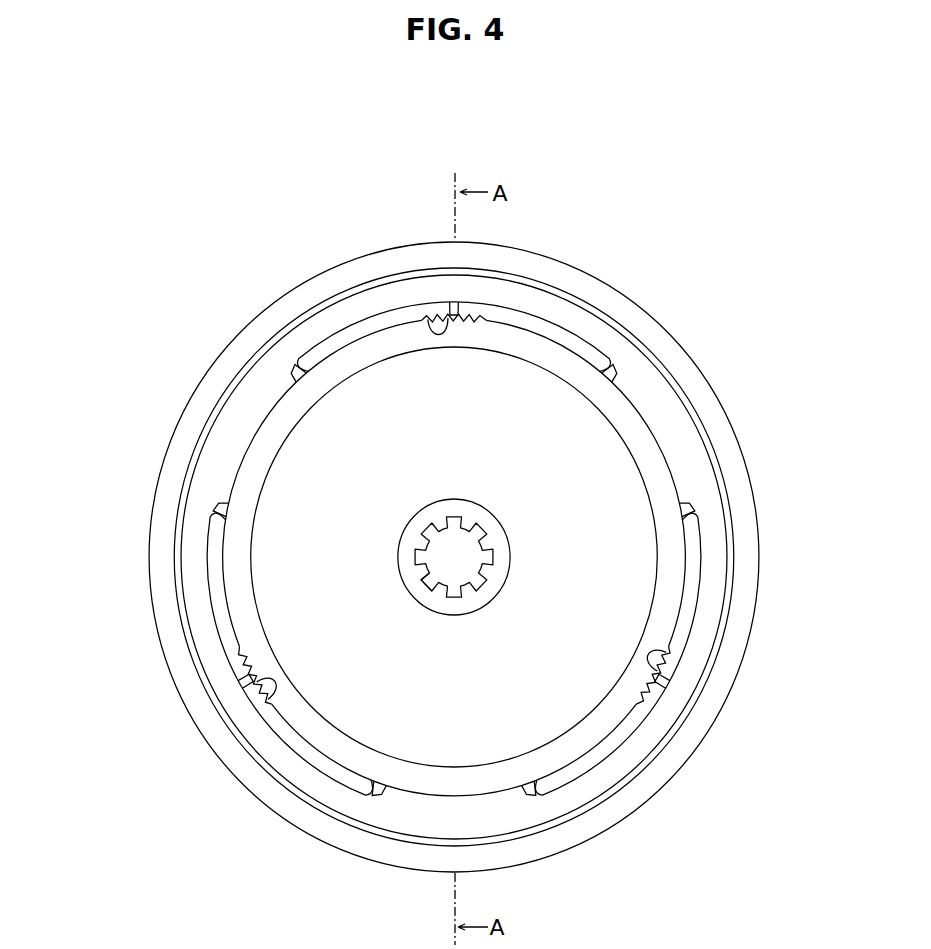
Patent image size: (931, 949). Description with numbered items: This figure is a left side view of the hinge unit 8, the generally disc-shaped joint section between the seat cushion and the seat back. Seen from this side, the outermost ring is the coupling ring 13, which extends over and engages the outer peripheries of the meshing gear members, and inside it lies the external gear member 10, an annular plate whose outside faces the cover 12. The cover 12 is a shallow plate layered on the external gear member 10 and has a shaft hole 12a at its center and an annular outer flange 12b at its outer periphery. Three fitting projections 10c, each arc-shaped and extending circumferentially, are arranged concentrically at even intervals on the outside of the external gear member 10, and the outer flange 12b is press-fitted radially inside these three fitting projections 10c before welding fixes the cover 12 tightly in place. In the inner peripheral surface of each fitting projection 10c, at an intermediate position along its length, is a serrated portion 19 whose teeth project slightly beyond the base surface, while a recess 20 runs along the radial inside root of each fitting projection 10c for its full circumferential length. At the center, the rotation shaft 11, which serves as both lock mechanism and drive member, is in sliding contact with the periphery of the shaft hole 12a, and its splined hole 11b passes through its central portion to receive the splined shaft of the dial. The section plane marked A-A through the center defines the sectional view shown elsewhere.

The hinge unit 8 is at (660, 310).
The external gear member 10 is at (240, 415).
The fitting projections 10c is at (337, 340).
The rotation shaft 11 is at (424, 530).
The splined hole 11b is at (422, 574).
The cover 12 is at (590, 448).
The shaft hole 12a is at (463, 505).
The outer flange 12b is at (250, 480).
The coupling ring 13 is at (362, 272).
The serrated portion 19 is at (424, 318).
The recess 20 is at (298, 370).